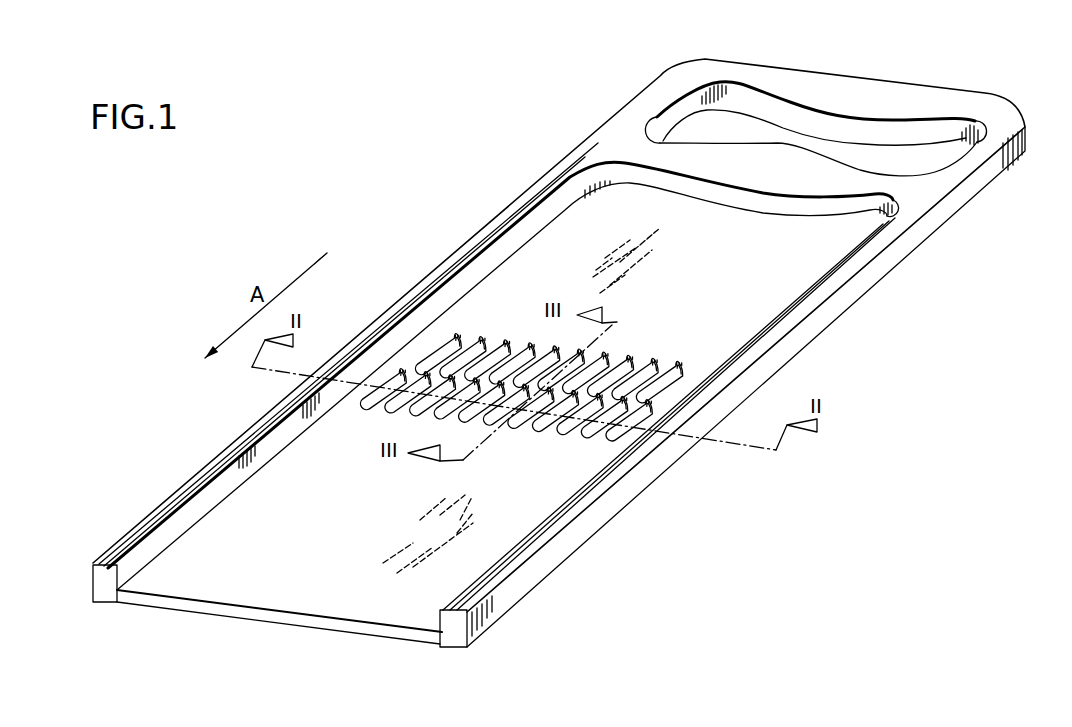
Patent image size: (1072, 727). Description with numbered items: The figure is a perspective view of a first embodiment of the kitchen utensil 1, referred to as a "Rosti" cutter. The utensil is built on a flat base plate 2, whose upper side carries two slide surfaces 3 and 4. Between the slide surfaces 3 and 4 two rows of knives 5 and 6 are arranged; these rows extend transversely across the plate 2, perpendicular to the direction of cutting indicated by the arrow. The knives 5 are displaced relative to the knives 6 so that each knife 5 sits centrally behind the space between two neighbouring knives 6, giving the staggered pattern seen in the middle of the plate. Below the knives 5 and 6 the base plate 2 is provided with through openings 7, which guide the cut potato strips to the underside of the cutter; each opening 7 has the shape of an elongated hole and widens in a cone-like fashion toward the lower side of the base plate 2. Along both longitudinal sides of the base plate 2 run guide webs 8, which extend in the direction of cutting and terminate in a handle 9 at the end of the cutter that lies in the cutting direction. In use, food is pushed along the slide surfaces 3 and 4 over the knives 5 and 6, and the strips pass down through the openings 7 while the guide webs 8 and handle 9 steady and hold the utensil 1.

The kitchen utensil 1 is at (463, 207).
The flat base plate 2 is at (612, 368).
The slide surface 3 is at (713, 290).
The slide surface 4 is at (470, 547).
The knives 5 is at (780, 347).
The knives 6 is at (657, 418).
The through openings 7 is at (433, 340).
The guide webs 8 is at (107, 583).
The handle 9 is at (849, 103).